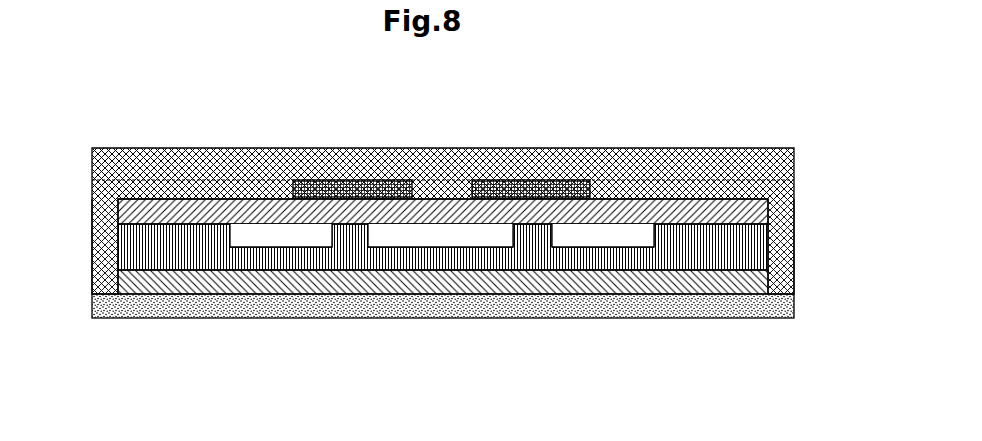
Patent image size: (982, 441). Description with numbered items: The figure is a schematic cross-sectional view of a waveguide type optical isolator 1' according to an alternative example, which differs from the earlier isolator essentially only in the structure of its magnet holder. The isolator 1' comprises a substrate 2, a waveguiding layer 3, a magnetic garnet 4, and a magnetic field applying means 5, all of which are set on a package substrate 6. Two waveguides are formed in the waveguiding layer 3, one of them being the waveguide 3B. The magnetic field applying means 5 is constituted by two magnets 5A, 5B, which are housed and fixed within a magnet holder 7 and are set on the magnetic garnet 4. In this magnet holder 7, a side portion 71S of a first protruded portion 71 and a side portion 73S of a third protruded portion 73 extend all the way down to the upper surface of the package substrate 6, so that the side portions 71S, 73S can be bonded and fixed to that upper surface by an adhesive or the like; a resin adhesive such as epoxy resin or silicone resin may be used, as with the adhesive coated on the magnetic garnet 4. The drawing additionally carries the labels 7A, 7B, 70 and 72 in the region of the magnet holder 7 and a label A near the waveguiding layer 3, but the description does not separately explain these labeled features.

The waveguide type optical isolator 1' is at (456, 249).
The substrate 2 is at (747, 278).
The waveguiding layer 3 is at (491, 292).
The waveguide 3B is at (535, 262).
The magnetic garnet 4 is at (486, 286).
The magnetic field applying means 5 is at (445, 310).
The magnet 5A is at (382, 198).
The magnet 5B is at (507, 200).
The package substrate 6 is at (750, 305).
The magnet holder 7 is at (456, 185).
The first embedded element 7A is at (331, 177).
The second embedded element 7B is at (543, 177).
The top portion of sealing member 70 is at (609, 148).
The first protruded portion 71 is at (192, 190).
The side portion of first protruded portion 71S is at (93, 245).
The second sealing portion 72 is at (435, 180).
The third protruded portion 73 is at (672, 188).
The side portion of third protruded portion 73S is at (795, 220).
The region A is at (353, 227).